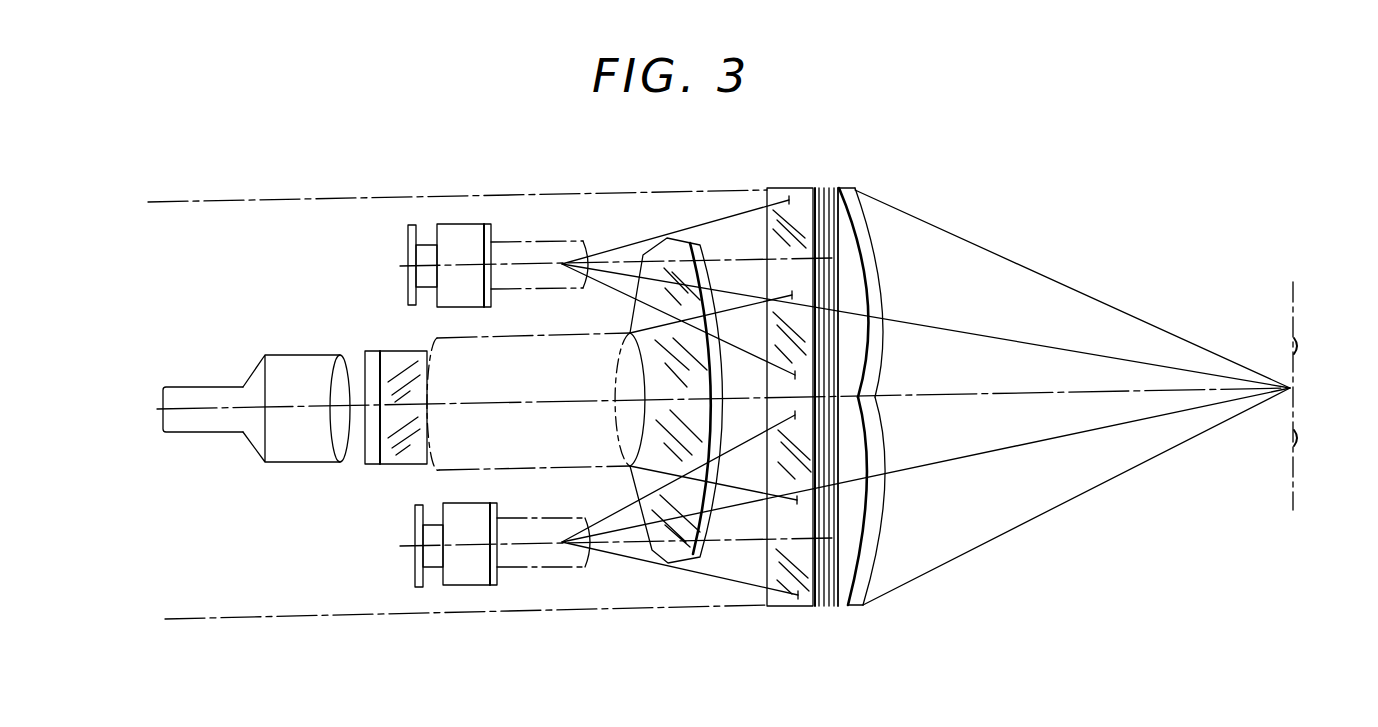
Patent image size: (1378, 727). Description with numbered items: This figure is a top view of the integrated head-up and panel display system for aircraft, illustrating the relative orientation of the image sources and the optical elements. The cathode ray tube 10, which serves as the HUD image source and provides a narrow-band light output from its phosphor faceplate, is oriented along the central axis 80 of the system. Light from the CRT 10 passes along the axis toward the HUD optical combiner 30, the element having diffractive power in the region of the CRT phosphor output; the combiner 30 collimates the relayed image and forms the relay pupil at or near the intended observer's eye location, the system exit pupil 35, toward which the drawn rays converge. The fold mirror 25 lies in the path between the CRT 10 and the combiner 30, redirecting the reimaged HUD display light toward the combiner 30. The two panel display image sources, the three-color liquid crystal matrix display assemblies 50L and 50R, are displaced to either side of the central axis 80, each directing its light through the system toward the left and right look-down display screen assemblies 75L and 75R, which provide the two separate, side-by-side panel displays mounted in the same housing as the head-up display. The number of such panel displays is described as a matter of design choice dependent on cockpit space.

The cathode ray tube 10 is at (266, 439).
The fold mirror 25 is at (808, 600).
The HUD optical combiner 30 is at (651, 551).
The system exit pupil 35 is at (1300, 325).
The right liquid crystal matrix display assembly 50R is at (462, 216).
The left liquid crystal matrix display assembly 50L is at (472, 594).
The right look-down display screen assembly 75R is at (856, 186).
The left look-down display screen assembly 75L is at (862, 609).
The central axis 80 is at (1038, 392).